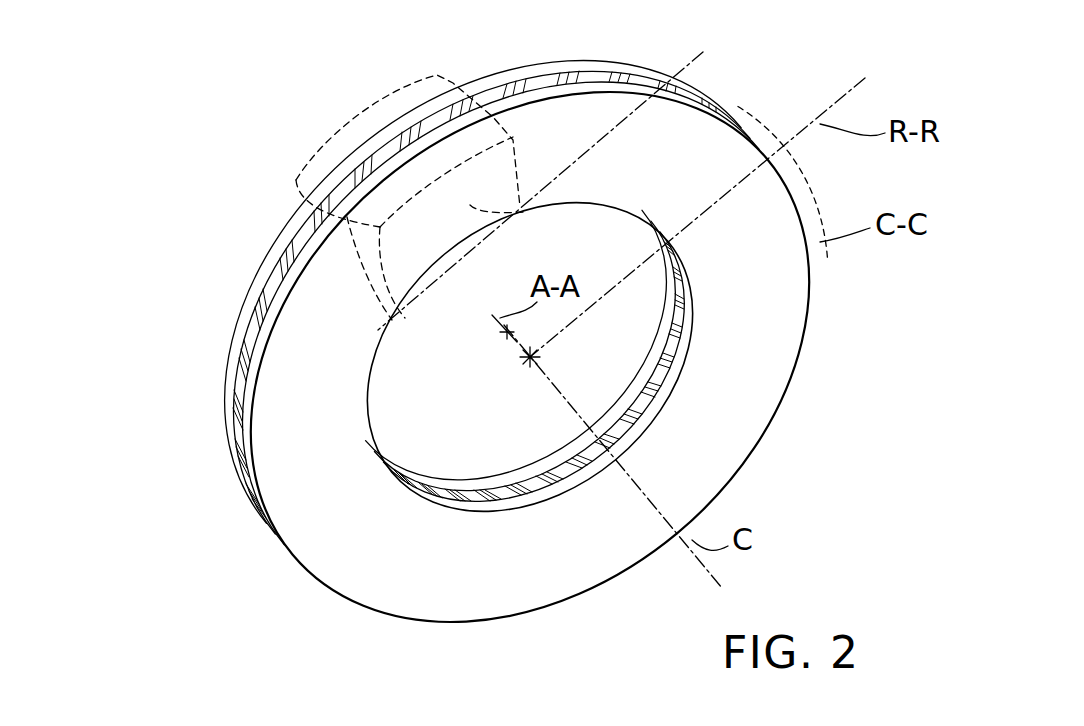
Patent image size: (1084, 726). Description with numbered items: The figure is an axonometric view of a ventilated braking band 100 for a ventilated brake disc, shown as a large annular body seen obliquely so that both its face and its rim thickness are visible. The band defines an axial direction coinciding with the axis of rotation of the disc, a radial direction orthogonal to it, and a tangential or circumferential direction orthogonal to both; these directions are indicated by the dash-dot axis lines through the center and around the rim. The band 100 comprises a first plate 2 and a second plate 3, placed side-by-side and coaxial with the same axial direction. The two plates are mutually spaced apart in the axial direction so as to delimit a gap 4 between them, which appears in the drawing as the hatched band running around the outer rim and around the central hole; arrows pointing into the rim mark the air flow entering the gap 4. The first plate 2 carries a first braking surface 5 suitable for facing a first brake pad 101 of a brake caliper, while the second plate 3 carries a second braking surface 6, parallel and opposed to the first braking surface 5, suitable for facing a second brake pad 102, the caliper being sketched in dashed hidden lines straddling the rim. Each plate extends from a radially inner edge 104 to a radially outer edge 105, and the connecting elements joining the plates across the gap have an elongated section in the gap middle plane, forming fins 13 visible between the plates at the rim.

The first plate 2 is at (767, 318).
The second plate 3 is at (280, 233).
The second braking surface 6 is at (243, 318).
The fins 13 is at (607, 63).
The ventilated braking band 100 is at (735, 385).
The first braking surface 5 is at (330, 516).
The radially inner edge 104 is at (453, 482).
The radially outer edge 105 is at (212, 389).
The gap 4 is at (205, 434).
The first brake pad 101 is at (564, 178).
The second brake pad 102 is at (312, 147).